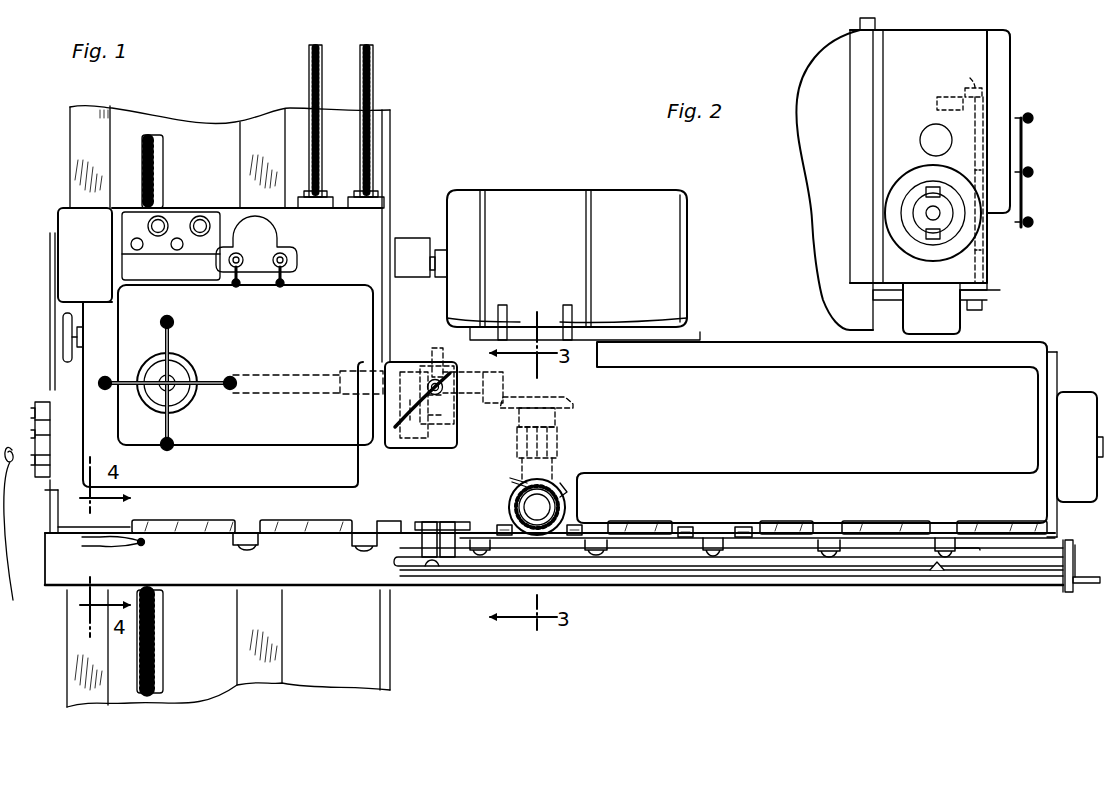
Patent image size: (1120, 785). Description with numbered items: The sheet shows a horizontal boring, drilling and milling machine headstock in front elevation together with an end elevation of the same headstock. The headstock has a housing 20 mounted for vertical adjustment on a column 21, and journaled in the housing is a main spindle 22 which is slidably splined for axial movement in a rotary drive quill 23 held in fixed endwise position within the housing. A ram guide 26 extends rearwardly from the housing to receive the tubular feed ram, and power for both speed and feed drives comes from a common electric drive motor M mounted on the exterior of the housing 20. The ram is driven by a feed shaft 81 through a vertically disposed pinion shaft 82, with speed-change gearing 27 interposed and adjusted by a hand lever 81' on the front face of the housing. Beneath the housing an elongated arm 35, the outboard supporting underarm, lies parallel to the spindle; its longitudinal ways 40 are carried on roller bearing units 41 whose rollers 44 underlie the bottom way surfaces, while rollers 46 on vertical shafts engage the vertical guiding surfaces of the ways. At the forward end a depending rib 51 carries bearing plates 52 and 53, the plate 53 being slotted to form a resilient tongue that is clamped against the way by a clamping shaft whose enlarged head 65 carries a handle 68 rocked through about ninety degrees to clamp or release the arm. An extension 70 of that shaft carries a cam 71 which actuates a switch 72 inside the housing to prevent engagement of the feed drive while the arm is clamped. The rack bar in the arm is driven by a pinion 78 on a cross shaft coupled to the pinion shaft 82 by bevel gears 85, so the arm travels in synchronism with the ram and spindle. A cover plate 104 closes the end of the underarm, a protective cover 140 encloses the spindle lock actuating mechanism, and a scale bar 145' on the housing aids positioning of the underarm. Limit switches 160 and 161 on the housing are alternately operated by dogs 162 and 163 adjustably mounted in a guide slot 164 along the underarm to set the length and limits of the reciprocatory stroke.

In FIG. 1, the housing 20 is at (56, 220).
In FIG. 2, the housing 20 is at (990, 55).
In FIG. 1, the column 21 is at (125, 113).
In FIG. 2, the column 21 is at (822, 178).
In FIG. 1, the main spindle 22 is at (43, 403).
In FIG. 2, the main spindle 22 is at (928, 210).
In FIG. 2, the rotary drive quill 23 is at (910, 217).
In FIG. 1, the ram guide 26 is at (1005, 355).
In FIG. 1, the speed-change gearing 27 is at (397, 355).
In FIG. 1, the arm 35 is at (690, 588).
In FIG. 2, the arm 35 is at (915, 318).
In FIG. 1, the longitudinal ways 40 is at (188, 531).
In FIG. 1, the roller bearing units 41 is at (238, 541).
In FIG. 1, the roller 44 is at (246, 551).
In FIG. 1, the rollers 46 is at (504, 525).
In FIG. 1, the depending rib 51 is at (65, 513).
In FIG. 2, the bearing plate 52 is at (876, 295).
In FIG. 1, the bearing plate 53 is at (72, 530).
In FIG. 2, the bearing plate 53 is at (987, 297).
In FIG. 2, the enlarged head 65 is at (980, 308).
In FIG. 1, the handle 68 is at (126, 543).
In FIG. 2, the extension 70 is at (975, 133).
In FIG. 2, the cam 71 is at (974, 76).
In FIG. 2, the switch 72 is at (955, 96).
In FIG. 1, the pinion 78 is at (516, 495).
In FIG. 1, the feed shaft 81 is at (502, 374).
In FIG. 1, the hand lever 81' is at (418, 422).
In FIG. 1, the pinion shaft 82 is at (558, 430).
In FIG. 1, the bevel gears 85 is at (566, 492).
In FIG. 1, the cover plate 104 is at (1068, 592).
In FIG. 1, the protective cover 140 is at (1082, 398).
In FIG. 1, the scale bar 145' is at (996, 551).
In FIG. 1, the limit switch 160 is at (428, 522).
In FIG. 1, the limit switch 161 is at (448, 522).
In FIG. 1, the dog 162 is at (430, 568).
In FIG. 1, the dog 163 is at (940, 574).
In FIG. 1, the guide slot 164 is at (886, 572).
In FIG. 1, the electric drive motor M is at (600, 193).